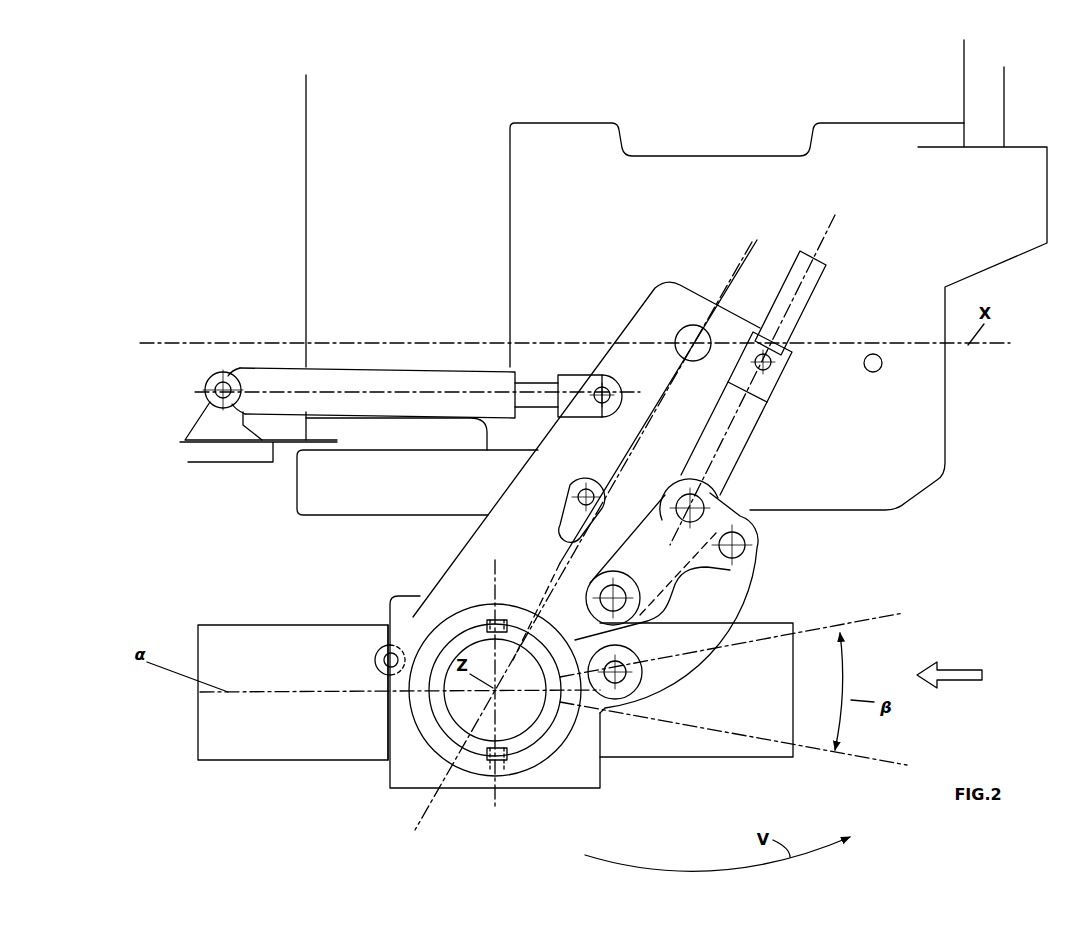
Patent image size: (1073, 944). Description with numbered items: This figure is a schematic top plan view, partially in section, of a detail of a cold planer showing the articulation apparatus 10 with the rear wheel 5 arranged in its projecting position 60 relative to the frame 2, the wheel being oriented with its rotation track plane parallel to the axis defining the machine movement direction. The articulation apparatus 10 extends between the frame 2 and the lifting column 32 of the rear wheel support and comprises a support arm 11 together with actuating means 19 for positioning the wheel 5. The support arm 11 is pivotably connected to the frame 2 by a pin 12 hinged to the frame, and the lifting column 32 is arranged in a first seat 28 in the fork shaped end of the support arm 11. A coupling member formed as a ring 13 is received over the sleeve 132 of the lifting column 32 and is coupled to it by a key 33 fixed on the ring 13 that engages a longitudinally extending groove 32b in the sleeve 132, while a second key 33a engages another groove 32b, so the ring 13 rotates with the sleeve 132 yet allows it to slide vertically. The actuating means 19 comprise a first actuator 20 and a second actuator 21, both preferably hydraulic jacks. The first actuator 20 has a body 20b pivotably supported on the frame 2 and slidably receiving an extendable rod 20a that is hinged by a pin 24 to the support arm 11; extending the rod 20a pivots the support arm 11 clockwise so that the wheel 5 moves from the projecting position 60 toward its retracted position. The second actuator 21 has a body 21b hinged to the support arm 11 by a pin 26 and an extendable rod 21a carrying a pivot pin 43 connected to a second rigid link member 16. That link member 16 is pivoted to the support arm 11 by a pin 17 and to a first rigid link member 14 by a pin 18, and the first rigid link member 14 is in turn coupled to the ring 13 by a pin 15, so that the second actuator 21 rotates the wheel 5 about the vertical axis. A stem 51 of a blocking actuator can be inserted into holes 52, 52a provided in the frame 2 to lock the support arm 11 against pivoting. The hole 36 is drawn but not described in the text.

The frame 2 is at (912, 415).
The rear wheel 5 is at (232, 740).
The articulation apparatus 10 is at (320, 553).
The support arm 11 is at (485, 543).
The pin 12 is at (700, 327).
The coupling member 13 is at (520, 768).
The first rigid link member 14 is at (713, 627).
The pin 15 is at (620, 685).
The second rigid link member 16 is at (720, 532).
The pin 17 is at (613, 585).
The pin 18 is at (748, 543).
The actuating means 19 is at (487, 322).
The first actuator 20 is at (402, 322).
The extendable rod 20a is at (541, 375).
The body 20b is at (345, 367).
The second actuator 21 is at (812, 330).
The extendable rod 21a is at (725, 470).
The body 21b is at (810, 283).
The pin 24 is at (598, 375).
The pin 26 is at (772, 362).
The first seat 28 is at (541, 768).
The lifting column 32 is at (420, 794).
The groove 32b is at (487, 625).
The key 33 is at (490, 620).
The second key 33a is at (495, 762).
The hole 36 is at (372, 665).
The pivot pin 43 is at (712, 492).
The stem 51 is at (590, 485).
The hole 52 is at (572, 490).
The hole 52a is at (873, 372).
The projecting position 60 is at (964, 675).
The sleeve 132 is at (447, 718).